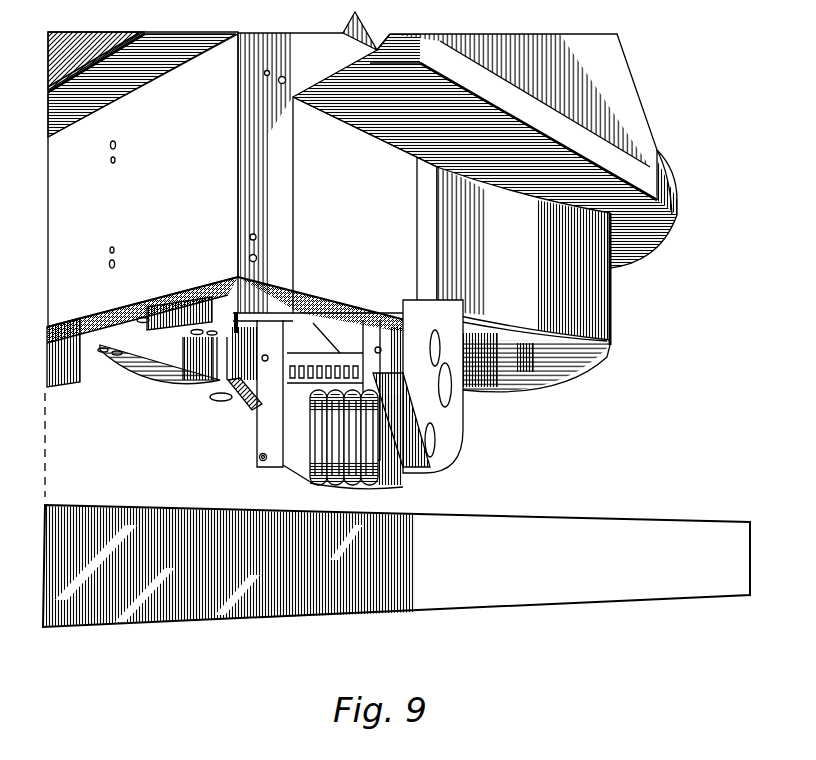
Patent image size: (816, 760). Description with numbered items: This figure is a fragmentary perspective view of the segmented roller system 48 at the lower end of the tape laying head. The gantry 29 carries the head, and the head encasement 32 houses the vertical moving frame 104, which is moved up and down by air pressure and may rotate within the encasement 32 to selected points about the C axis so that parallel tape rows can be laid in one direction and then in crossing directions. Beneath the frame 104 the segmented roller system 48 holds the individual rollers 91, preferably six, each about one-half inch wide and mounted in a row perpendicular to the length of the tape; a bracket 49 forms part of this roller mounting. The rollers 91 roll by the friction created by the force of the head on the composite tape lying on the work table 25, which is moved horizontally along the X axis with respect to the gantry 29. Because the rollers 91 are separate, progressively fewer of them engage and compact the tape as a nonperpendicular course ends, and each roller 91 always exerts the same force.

The gantry 29 is at (111, 73).
The head encasement 32 is at (629, 302).
The vertical moving frame 104 is at (455, 426).
The segmented roller system 48 is at (310, 488).
The bracket 49 is at (420, 479).
The segmented rollers 91 is at (360, 478).
The work table 25 is at (643, 523).